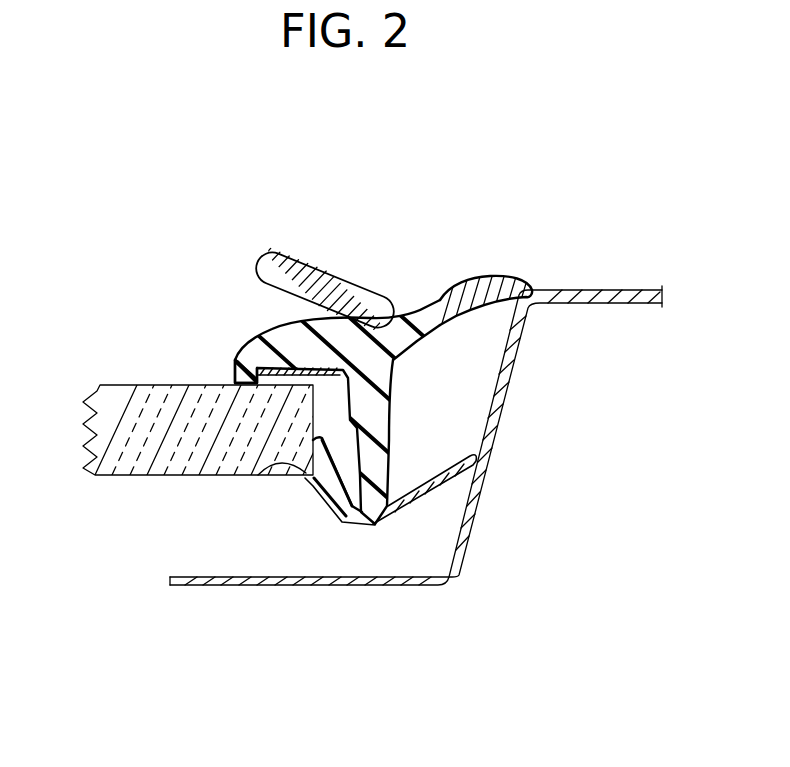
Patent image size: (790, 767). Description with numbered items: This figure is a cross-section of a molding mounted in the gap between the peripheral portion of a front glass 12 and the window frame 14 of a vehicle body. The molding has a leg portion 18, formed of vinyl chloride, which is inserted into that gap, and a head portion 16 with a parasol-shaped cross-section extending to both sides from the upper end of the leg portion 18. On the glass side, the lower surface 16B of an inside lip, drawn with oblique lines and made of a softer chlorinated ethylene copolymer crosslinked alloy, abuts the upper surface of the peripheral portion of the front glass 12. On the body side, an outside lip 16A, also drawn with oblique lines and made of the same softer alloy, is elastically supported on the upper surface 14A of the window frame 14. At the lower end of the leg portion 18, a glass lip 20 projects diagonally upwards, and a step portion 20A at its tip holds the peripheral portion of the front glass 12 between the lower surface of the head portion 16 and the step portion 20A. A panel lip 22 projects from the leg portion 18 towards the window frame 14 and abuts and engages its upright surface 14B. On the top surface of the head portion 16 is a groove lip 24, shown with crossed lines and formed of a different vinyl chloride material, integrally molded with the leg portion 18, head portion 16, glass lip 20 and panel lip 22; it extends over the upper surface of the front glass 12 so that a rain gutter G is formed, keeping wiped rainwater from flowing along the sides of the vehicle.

The front glass 12 is at (155, 383).
The window frame 14 is at (416, 590).
The upper surface of the window frame 14A is at (637, 289).
The upright surface of the window frame 14B is at (502, 405).
The head portion 16 is at (406, 322).
The outside lip 16A is at (490, 276).
The lower surface of the inside lip 16B is at (262, 387).
The leg portion 18 is at (390, 415).
The glass lip 20 is at (328, 510).
The step portion 20A is at (257, 473).
The panel lip 22 is at (466, 506).
The groove lip 24 is at (313, 257).
The rain gutter G is at (238, 318).